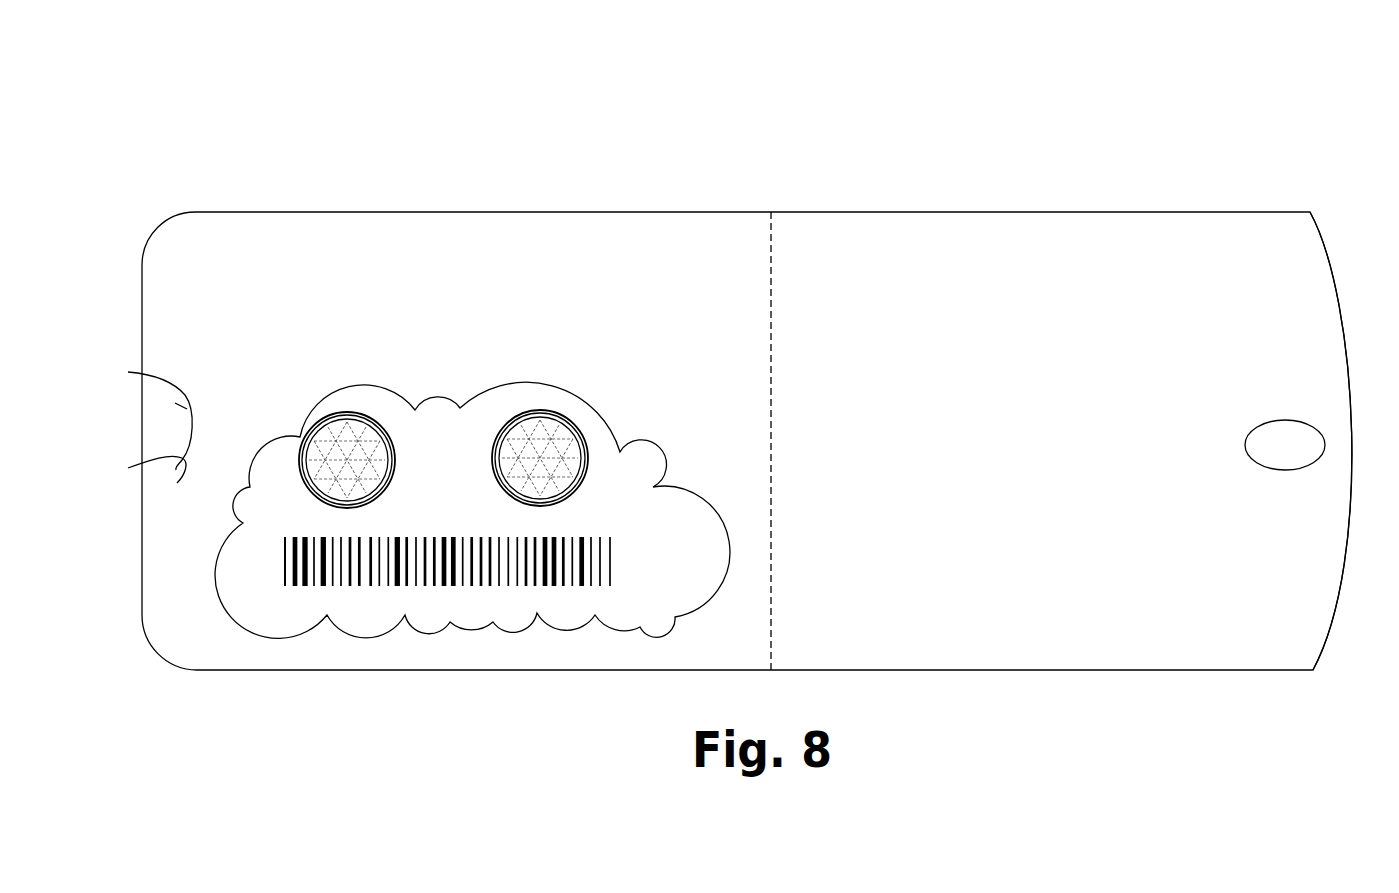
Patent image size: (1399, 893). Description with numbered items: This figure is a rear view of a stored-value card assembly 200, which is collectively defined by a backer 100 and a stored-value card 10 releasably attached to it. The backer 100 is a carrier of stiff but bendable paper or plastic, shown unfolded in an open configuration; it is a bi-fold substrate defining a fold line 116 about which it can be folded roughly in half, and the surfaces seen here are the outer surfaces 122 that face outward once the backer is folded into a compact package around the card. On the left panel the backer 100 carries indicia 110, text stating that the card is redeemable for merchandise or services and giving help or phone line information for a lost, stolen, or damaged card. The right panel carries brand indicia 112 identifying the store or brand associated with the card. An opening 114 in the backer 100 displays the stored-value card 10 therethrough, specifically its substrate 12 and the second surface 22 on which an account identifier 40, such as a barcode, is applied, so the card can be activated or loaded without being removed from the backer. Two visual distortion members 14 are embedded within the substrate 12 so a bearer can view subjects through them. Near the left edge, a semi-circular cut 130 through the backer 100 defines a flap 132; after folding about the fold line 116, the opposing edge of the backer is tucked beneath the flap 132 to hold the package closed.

The stored-value card assembly 200 is at (1268, 94).
The backer 100 is at (1121, 206).
The outer surfaces 122 is at (1232, 262).
The fold line 116 is at (772, 250).
The cut 130 is at (128, 372).
The flap 132 is at (128, 468).
The indicia 110 is at (568, 244).
The brand indicia 112 is at (1300, 485).
The stored-value card 10 is at (563, 608).
The opening 114 is at (639, 627).
The second surface 22 is at (364, 618).
The substrate 12 is at (275, 610).
The account identifier 40 is at (473, 610).
The visual distortion member 14 is at (585, 467).